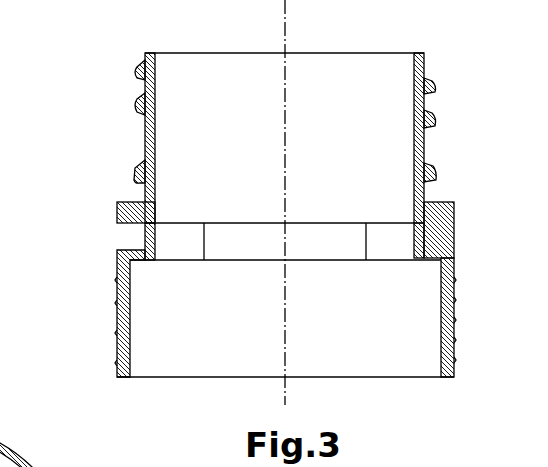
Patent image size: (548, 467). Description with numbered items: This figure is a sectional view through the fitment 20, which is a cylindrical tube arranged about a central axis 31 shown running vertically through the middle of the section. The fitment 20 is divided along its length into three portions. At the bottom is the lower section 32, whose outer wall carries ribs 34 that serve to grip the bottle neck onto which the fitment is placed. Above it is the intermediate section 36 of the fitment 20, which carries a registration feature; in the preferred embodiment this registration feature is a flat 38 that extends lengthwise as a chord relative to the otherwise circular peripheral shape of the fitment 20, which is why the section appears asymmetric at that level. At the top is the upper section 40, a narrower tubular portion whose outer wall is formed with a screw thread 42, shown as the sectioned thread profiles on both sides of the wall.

The fitment 20 is at (86, 187).
The central axis 31 is at (282, 25).
The lower section 32 is at (117, 295).
The ribs 34 is at (117, 342).
The intermediate section 36 is at (455, 228).
The flat 38 is at (144, 240).
The upper section 40 is at (145, 138).
The screw thread 42 is at (134, 72).